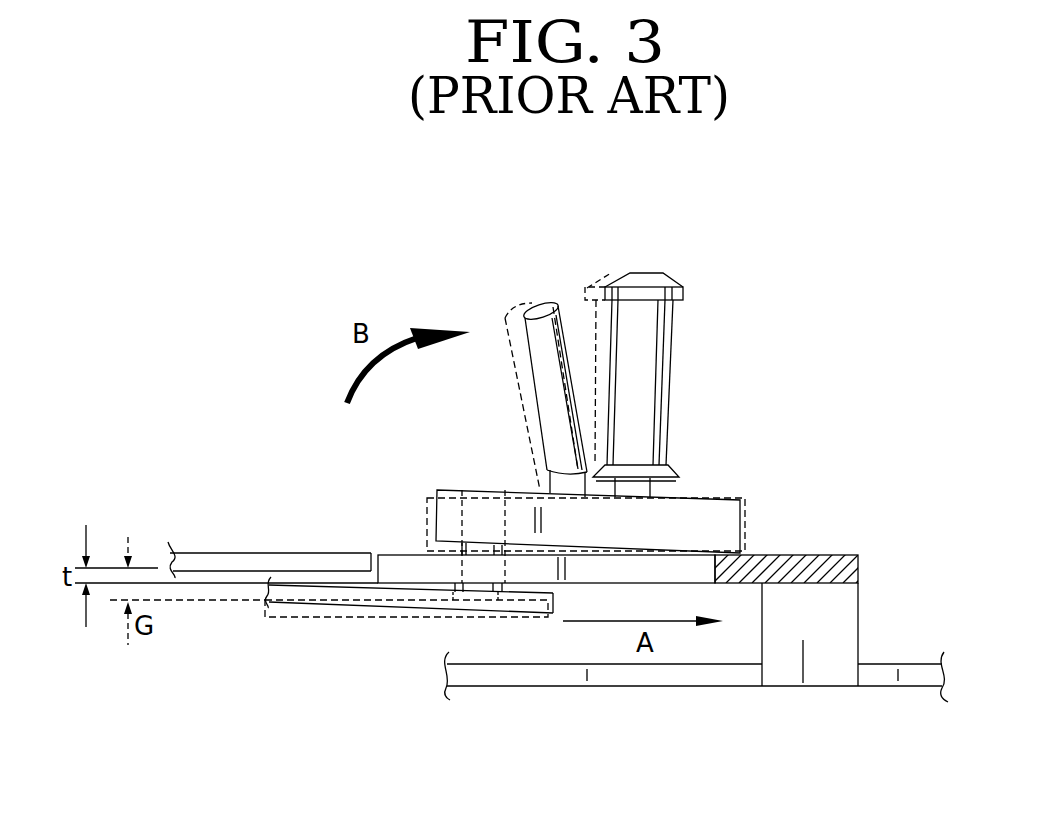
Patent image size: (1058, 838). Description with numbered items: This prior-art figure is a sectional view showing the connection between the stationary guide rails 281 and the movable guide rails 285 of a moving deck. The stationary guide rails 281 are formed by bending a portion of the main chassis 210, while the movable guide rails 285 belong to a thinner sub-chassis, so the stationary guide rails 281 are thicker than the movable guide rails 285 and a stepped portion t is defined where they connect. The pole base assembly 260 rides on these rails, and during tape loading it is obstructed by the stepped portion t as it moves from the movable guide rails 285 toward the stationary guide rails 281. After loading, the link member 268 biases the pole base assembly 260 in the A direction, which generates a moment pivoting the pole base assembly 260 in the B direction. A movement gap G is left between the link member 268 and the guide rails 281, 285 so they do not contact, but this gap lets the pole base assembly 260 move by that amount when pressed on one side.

The main chassis 210 is at (532, 674).
The pole base assembly 260 is at (749, 416).
The link member 268 is at (370, 592).
The stationary guide rails 281 is at (414, 558).
The movable guide rails 285 is at (312, 560).